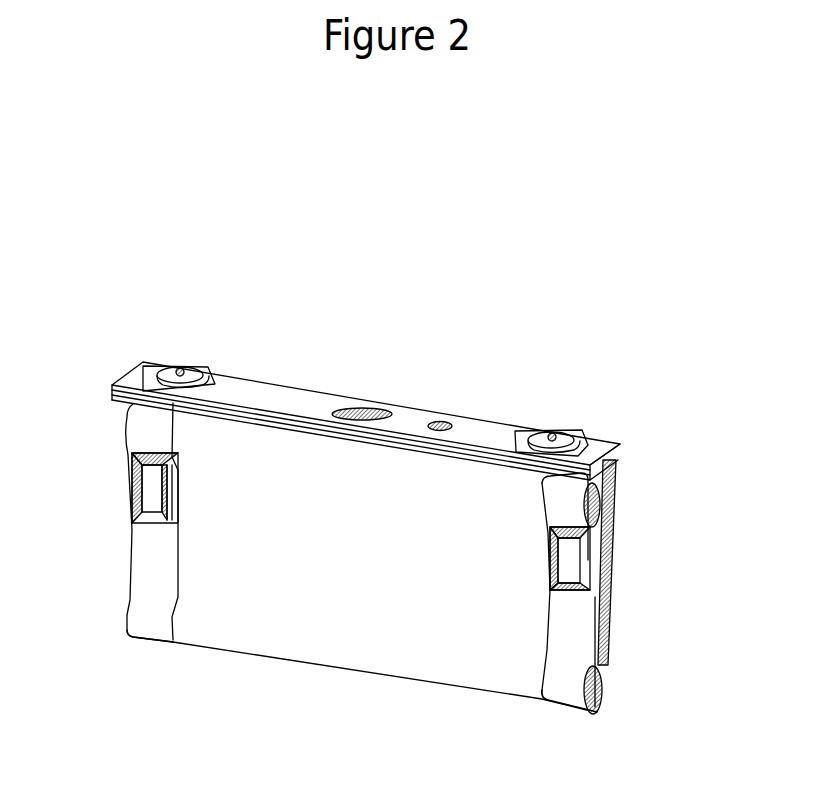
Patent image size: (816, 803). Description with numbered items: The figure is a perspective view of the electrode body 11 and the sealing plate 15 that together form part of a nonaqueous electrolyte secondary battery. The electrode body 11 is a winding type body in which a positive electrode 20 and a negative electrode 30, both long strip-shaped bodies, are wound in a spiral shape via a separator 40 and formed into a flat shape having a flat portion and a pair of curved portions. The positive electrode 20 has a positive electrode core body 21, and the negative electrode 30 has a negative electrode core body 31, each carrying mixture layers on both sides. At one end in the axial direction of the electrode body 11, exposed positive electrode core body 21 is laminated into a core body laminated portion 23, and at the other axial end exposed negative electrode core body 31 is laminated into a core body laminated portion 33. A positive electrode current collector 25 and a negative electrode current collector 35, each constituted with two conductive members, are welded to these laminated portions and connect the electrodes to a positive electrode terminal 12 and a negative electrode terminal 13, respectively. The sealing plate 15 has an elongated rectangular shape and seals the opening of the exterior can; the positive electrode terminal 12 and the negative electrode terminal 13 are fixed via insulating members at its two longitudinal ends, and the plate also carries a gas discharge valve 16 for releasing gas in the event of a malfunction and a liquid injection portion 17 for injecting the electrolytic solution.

The electrode body 11 is at (120, 412).
The positive electrode terminal 12 is at (551, 434).
The negative electrode terminal 13 is at (181, 368).
The sealing plate 15 is at (297, 396).
The gas discharge valve 16 is at (363, 408).
The liquid injection portion 17 is at (442, 422).
The positive electrode 20 is at (603, 683).
The positive electrode core body 21 is at (563, 713).
The core body laminated portion 23 is at (584, 627).
The positive electrode current collector 25 is at (600, 550).
The negative electrode 30 is at (122, 603).
The negative electrode core body 31 is at (155, 640).
The core body laminated portion 33 is at (140, 555).
The negative electrode current collector 35 is at (147, 490).
The separator 40 is at (332, 657).